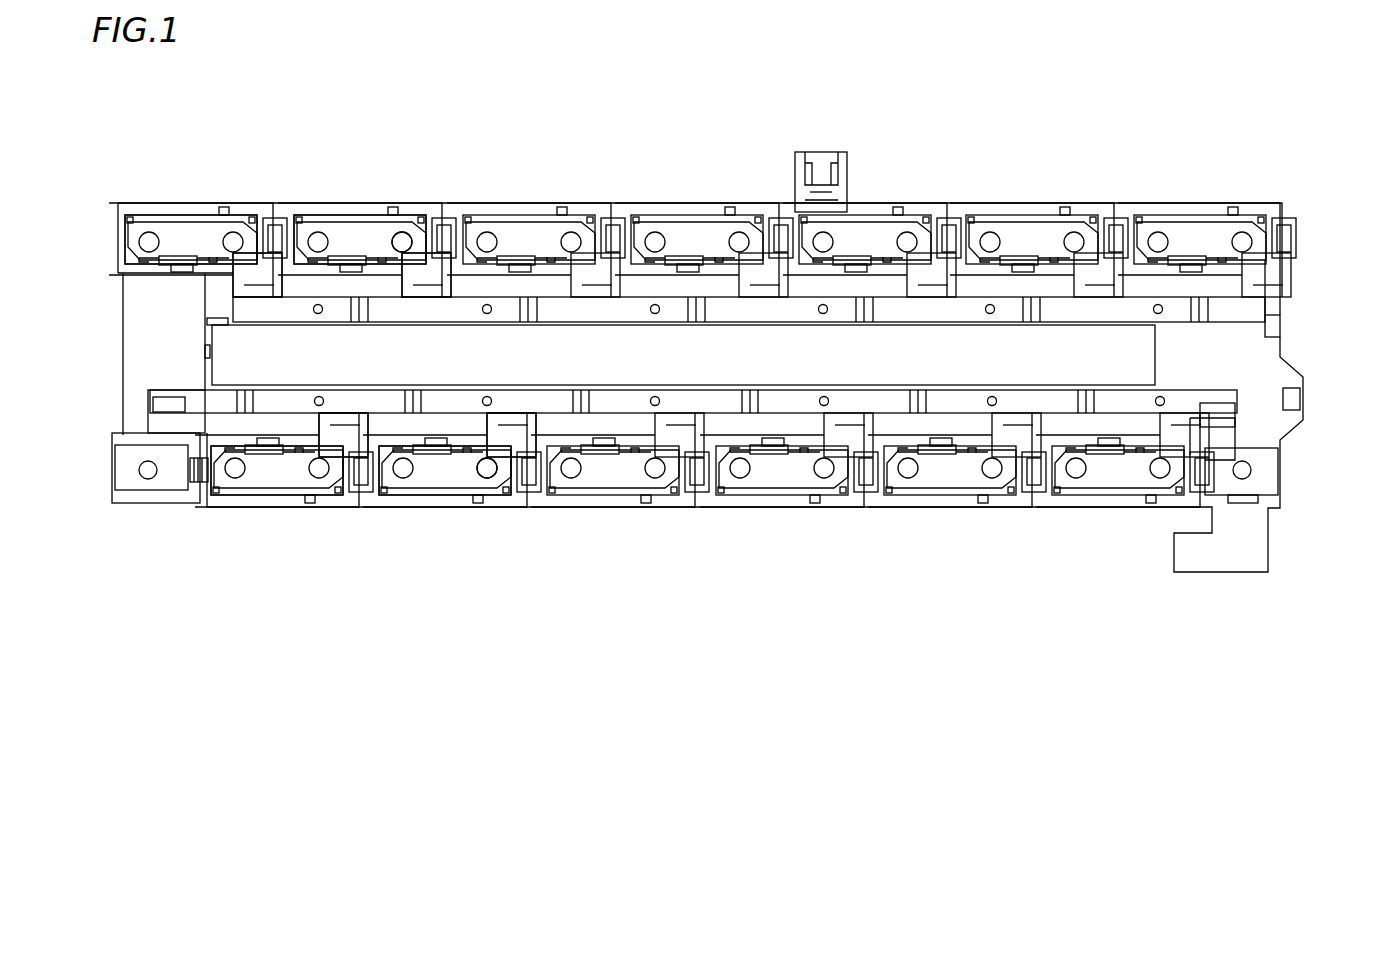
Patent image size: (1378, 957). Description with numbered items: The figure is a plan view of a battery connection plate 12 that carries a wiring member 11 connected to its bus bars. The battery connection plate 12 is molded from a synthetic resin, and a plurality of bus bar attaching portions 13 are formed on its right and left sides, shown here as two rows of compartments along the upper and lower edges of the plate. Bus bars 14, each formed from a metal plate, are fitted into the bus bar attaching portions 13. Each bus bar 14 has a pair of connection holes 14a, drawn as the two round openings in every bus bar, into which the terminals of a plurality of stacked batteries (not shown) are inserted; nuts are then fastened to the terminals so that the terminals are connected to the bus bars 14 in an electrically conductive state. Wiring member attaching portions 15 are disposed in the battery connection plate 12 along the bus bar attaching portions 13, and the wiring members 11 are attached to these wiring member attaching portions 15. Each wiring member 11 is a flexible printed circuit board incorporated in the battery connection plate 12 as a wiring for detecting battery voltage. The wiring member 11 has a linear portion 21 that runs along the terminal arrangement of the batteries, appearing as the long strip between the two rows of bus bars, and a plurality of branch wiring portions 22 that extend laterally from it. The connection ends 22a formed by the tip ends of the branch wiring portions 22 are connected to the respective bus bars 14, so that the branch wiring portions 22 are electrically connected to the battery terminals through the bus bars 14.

The wiring member 11 is at (1270, 292).
The battery connection plate 12 is at (1027, 203).
The bus bar attaching portion 13 is at (211, 222).
The bus bar 14 is at (177, 233).
The connection hole 14a is at (318, 238).
The wiring member attaching portion 15 is at (215, 290).
The linear portion 21 is at (1175, 318).
The branch wiring portion 22 is at (293, 283).
The connection end 22a is at (252, 258).